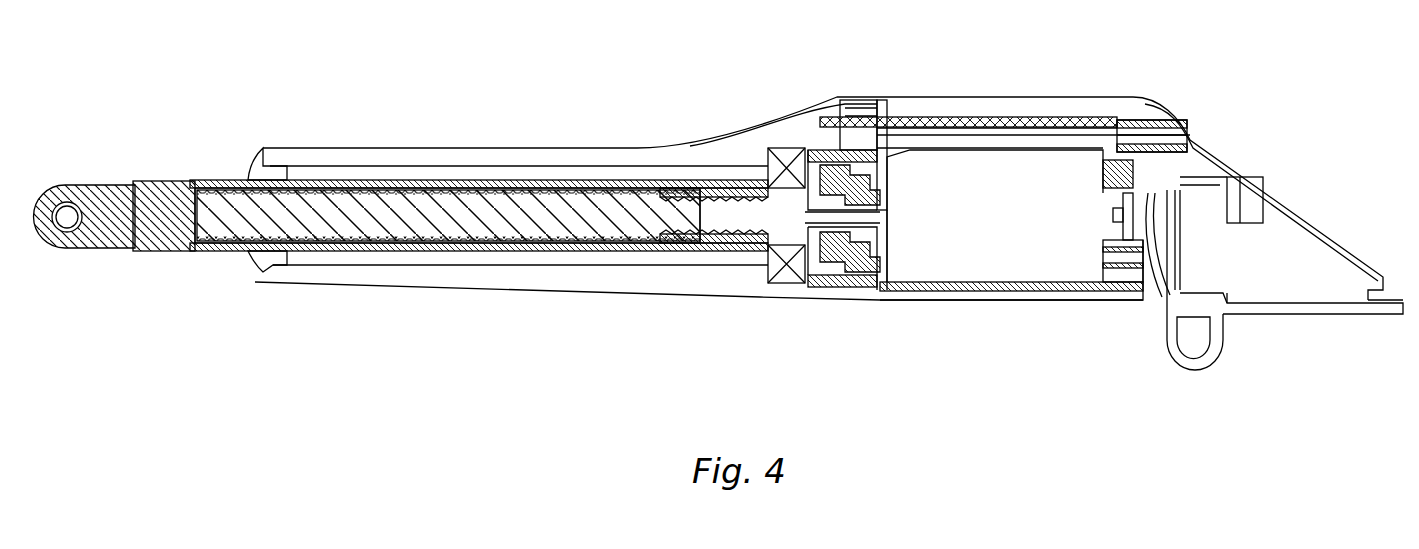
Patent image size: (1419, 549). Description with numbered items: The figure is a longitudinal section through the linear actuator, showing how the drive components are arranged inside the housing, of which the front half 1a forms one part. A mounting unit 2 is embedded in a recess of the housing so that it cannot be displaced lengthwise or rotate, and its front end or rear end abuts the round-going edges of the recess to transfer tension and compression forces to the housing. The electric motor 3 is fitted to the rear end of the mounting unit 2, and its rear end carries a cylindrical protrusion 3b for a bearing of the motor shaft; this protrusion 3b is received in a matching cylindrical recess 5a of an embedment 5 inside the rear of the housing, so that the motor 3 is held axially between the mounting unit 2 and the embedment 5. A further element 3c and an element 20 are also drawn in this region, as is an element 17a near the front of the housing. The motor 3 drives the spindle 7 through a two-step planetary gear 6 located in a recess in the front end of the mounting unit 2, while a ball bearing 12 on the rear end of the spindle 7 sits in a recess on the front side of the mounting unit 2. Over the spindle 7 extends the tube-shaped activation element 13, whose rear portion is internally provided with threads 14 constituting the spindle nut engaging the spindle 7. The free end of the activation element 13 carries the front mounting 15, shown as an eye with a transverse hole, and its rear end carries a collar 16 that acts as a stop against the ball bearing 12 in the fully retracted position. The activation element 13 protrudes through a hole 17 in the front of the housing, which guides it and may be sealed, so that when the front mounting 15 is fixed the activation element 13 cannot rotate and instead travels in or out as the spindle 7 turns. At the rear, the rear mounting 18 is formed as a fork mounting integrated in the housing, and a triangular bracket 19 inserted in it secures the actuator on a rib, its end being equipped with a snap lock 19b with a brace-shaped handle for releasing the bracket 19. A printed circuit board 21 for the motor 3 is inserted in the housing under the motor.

The front half of the housing 1a is at (520, 152).
The mounting unit 2 is at (822, 148).
The electric motor 3 is at (967, 265).
The cylindrical protrusion 3b is at (1110, 155).
The drive housing post 3c is at (1125, 242).
The embedment 5 is at (1148, 253).
The cylindrical recess 5a is at (1150, 190).
The two-step planetary gear 6 is at (852, 278).
The spindle 7 is at (573, 223).
The ball bearing 12 is at (785, 278).
The activation element 13 is at (392, 185).
The threads 14 is at (690, 240).
The front mounting 15 is at (103, 197).
The collar 16 is at (757, 178).
The hole 17 is at (255, 270).
The clip 17a is at (262, 165).
The rear mounting 18 is at (1200, 140).
The bracket 19 is at (1306, 330).
The snap lock 19b is at (1203, 373).
The cover element 20 is at (1167, 140).
The printed circuit board 21 is at (958, 122).